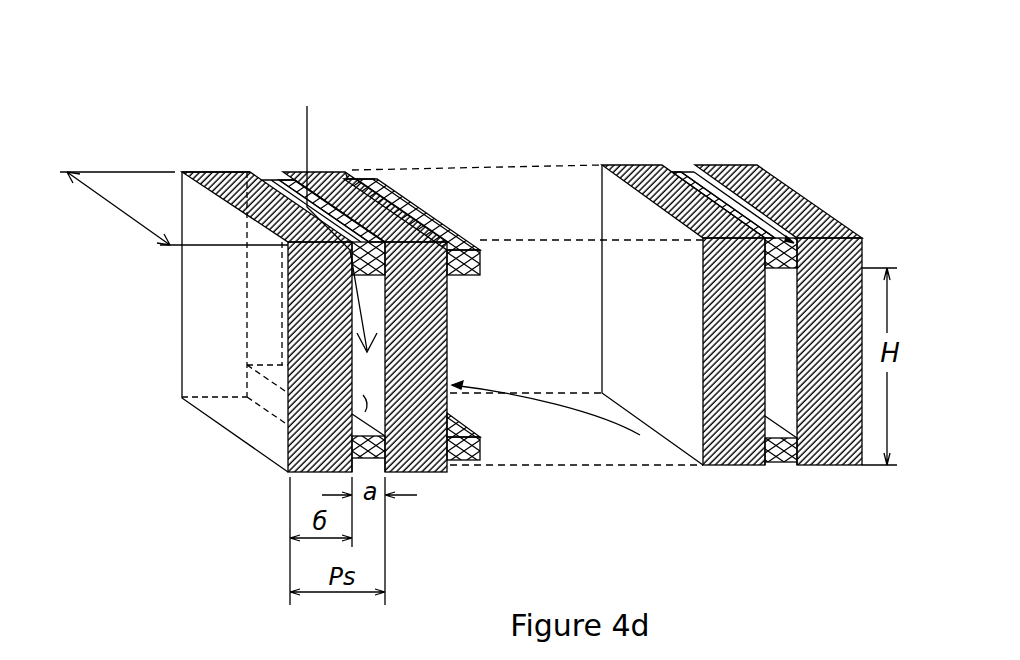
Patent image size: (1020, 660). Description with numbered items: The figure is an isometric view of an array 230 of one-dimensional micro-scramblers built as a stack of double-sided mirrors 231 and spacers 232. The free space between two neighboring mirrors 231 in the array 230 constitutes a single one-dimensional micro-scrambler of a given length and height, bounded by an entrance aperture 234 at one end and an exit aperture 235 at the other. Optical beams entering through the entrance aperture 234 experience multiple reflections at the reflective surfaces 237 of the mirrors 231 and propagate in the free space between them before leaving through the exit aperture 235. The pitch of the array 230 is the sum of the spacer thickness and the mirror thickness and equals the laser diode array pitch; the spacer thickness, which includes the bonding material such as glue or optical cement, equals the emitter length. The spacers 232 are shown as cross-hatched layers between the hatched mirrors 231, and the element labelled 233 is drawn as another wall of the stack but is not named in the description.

The array of one-dimensional micro-scramblers 230 is at (528, 137).
The double-sided mirror 231 is at (227, 172).
The spacer 232 is at (398, 207).
The wall 233 is at (375, 195).
The entrance aperture 234 is at (267, 296).
The exit aperture 235 is at (335, 440).
The reflective surface 237 is at (672, 413).